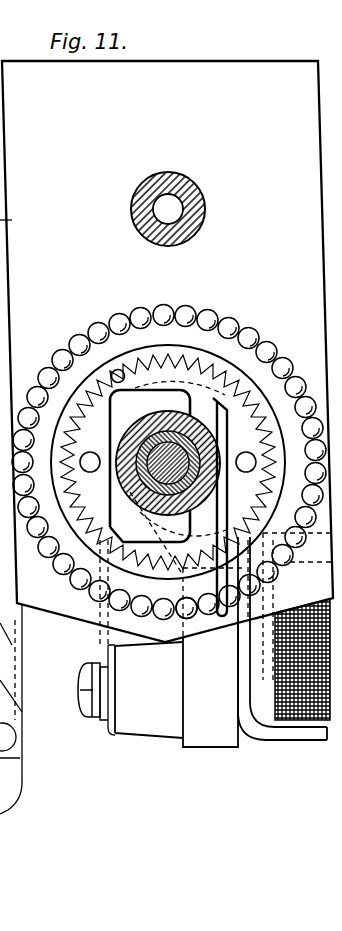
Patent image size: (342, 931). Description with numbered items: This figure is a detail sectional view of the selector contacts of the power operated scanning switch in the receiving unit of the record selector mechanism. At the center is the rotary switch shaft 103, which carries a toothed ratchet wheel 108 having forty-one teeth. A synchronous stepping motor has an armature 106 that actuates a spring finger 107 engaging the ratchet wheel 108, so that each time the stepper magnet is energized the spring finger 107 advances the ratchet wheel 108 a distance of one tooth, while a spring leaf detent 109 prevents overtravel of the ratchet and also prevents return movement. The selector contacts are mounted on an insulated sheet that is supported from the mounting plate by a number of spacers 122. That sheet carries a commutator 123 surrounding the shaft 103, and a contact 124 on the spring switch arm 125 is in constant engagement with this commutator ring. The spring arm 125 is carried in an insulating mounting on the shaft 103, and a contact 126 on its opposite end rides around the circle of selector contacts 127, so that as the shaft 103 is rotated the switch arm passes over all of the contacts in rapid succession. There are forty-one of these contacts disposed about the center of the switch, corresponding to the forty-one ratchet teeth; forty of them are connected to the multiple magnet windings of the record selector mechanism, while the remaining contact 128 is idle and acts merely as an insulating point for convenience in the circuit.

The spacer 122 is at (130, 206).
The commutator 123 is at (76, 397).
The contact 124 is at (115, 369).
The spring switch arm 125 is at (188, 406).
The selector contacts 127 is at (231, 323).
The idle contact 128 is at (184, 611).
The toothed ratchet wheel 108 is at (256, 388).
The rotary switch shaft 103 is at (210, 434).
The spring leaf detent 109 is at (320, 543).
The spring finger 107 is at (110, 640).
The contact 126 is at (208, 612).
The armature 106 is at (318, 718).